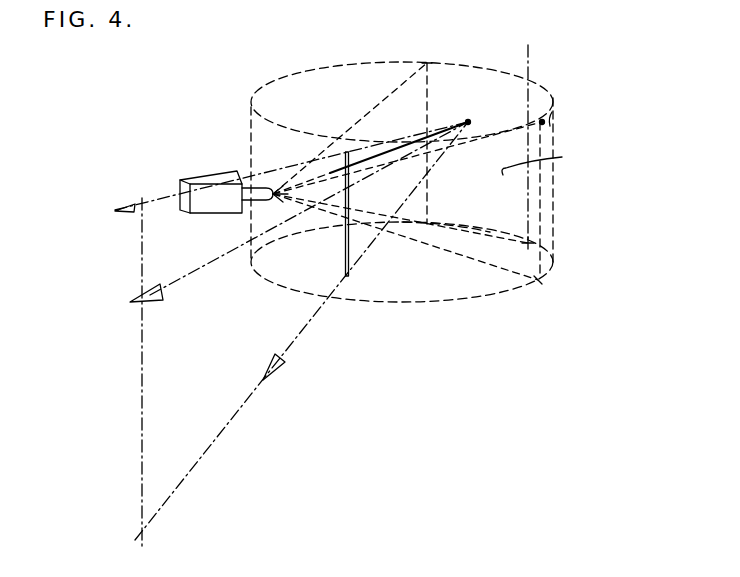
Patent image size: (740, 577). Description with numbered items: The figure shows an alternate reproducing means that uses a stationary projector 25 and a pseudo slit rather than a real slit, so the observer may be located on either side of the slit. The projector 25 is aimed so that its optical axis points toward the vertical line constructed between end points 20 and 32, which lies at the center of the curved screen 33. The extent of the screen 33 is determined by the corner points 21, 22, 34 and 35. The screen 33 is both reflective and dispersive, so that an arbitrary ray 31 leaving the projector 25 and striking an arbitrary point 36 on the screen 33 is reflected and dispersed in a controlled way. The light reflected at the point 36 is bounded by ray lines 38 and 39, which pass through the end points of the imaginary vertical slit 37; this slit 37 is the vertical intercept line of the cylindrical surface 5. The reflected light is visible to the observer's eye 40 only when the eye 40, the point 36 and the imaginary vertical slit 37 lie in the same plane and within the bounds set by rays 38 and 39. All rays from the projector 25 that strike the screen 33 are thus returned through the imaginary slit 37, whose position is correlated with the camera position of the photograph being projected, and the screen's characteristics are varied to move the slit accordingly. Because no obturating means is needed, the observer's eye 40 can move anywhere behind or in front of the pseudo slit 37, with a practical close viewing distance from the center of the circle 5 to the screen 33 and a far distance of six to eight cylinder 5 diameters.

The cylindrical surface 5 is at (340, 63).
The end point 20 is at (532, 80).
The corner point 21 is at (427, 62).
The corner point 22 is at (545, 122).
The projector 25 is at (207, 175).
The ray 31 is at (333, 170).
The end point 32 is at (526, 244).
The screen 33 is at (562, 158).
The corner point 34 is at (541, 283).
The corner point 35 is at (424, 228).
The point 36 is at (468, 120).
The imaginary vertical slit 37 is at (341, 238).
The ray 38 is at (305, 330).
The ray 39 is at (157, 200).
The observer's eye 40 is at (140, 294).